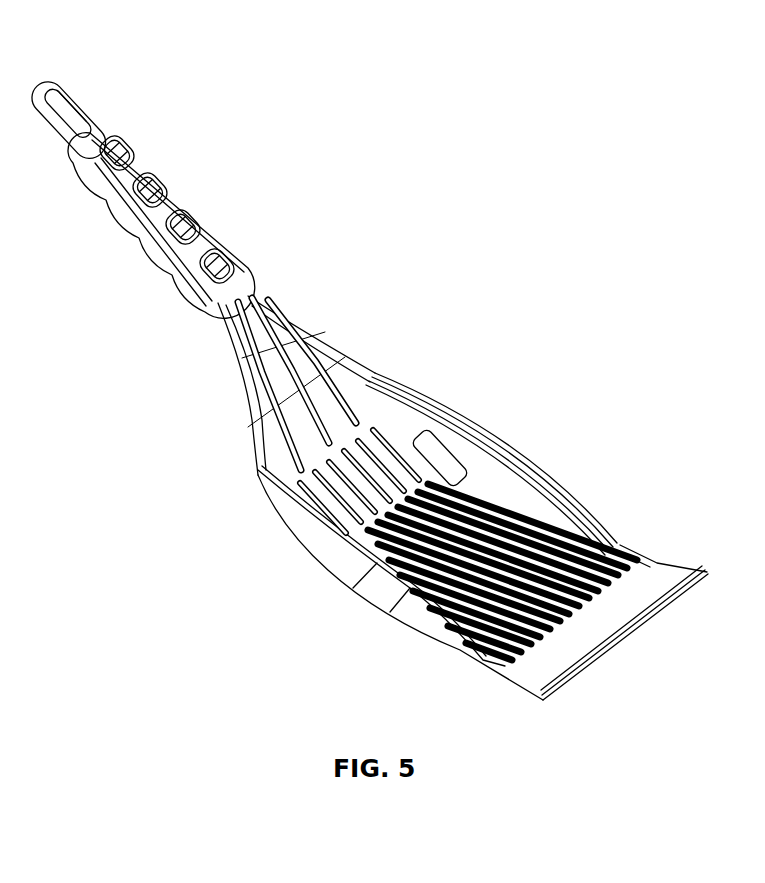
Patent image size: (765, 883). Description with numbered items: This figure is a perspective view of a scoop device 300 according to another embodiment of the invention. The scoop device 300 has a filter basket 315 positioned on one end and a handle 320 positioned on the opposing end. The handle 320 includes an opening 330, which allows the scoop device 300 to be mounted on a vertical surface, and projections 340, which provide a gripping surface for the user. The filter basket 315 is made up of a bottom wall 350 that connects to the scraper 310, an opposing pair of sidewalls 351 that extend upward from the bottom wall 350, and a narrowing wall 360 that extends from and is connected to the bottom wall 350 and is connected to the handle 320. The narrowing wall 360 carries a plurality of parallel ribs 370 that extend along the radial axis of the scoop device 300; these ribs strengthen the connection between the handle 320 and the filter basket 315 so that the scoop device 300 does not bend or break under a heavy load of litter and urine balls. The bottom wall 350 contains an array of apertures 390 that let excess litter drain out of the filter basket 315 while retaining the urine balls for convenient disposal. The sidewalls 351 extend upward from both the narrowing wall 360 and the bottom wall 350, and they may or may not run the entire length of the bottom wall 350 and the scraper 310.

The scoop device 300 is at (573, 90).
The scraper 310 is at (627, 643).
The filter basket 315 is at (537, 467).
The handle 320 is at (183, 197).
The opening 330 is at (53, 80).
The projections 340 is at (120, 230).
The bottom wall 350 is at (640, 547).
The sidewalls 351 is at (467, 430).
The narrowing wall 360 is at (327, 350).
The parallel ribs 370 is at (275, 433).
The apertures 390 is at (503, 660).